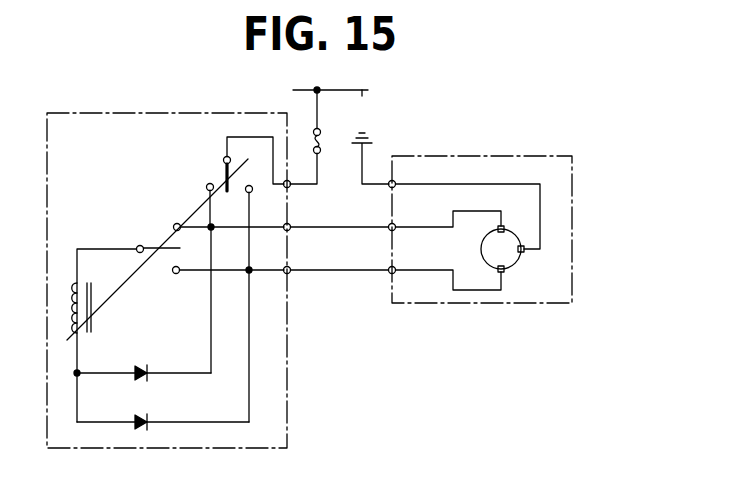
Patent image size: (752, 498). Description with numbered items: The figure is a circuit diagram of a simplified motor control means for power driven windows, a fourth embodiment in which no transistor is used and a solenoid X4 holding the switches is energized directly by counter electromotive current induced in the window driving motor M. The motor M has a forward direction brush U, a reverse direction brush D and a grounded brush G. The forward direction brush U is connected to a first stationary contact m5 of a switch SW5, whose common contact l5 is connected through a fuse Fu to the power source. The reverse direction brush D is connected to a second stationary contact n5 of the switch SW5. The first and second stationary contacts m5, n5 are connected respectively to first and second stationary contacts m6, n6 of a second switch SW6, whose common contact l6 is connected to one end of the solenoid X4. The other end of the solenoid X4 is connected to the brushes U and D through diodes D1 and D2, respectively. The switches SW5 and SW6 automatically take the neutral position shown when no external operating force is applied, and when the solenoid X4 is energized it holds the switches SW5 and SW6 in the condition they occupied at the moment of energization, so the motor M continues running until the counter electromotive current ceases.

The switch SW5 is at (194, 156).
The second switch SW6 is at (150, 229).
The common contact l5 is at (242, 160).
The common contact l6 is at (110, 323).
The second stationary contact n5 is at (197, 194).
The second stationary contact n6 is at (221, 218).
The first stationary contact m5 is at (261, 304).
The first stationary contact m6 is at (225, 284).
The solenoid X4 is at (92, 322).
The diode D1 is at (163, 411).
The diode D2 is at (142, 363).
The fuse Fu is at (318, 143).
The motor M is at (486, 156).
The reverse direction brush D is at (504, 228).
The grounded brush G is at (524, 252).
The forward direction brush U is at (504, 271).